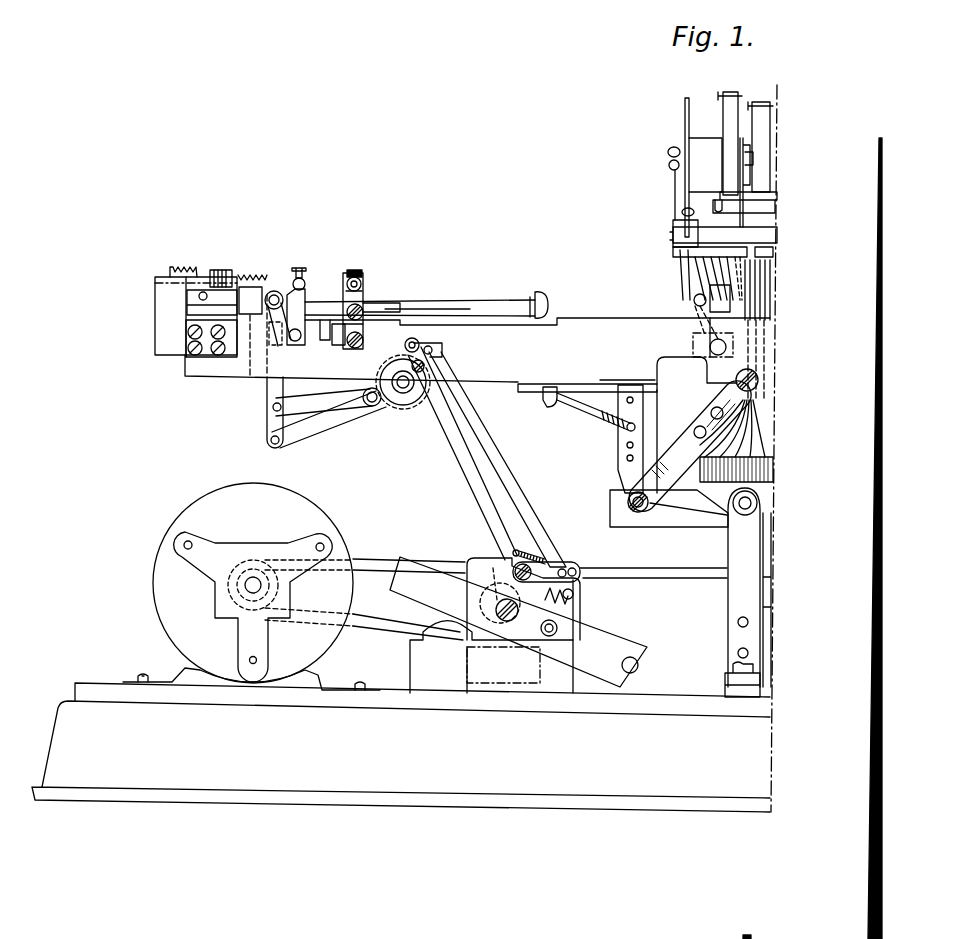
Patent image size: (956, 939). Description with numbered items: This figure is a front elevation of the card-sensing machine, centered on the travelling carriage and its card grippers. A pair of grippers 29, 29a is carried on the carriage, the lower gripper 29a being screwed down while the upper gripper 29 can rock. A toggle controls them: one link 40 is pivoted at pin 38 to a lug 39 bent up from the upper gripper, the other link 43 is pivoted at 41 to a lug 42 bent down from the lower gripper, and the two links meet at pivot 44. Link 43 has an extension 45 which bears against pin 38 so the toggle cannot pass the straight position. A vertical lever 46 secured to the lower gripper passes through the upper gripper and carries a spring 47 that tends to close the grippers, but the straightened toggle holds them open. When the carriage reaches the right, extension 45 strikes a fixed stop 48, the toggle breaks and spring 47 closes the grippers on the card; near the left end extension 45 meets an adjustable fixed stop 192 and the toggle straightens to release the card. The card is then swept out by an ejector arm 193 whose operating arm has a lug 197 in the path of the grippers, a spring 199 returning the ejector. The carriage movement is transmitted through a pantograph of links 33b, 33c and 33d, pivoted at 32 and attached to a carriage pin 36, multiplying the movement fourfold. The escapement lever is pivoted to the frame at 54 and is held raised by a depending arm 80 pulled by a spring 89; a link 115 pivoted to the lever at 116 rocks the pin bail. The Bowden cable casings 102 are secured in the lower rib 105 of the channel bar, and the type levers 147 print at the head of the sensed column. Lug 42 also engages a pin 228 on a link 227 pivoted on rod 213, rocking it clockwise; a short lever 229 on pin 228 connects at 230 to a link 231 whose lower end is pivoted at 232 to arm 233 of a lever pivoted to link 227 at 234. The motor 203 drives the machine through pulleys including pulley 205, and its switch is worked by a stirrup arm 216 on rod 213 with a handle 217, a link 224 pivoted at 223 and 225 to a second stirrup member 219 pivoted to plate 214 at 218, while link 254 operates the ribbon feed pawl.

The upper gripper 29 is at (420, 305).
The lower gripper 29a is at (320, 347).
The pivot 32 is at (410, 392).
The pantograph link 33b is at (357, 409).
The pantograph link 33c is at (313, 394).
The pantograph link 33d is at (268, 392).
The pin 36 is at (277, 326).
The pivot pin 38 is at (362, 297).
The lug 39 is at (307, 300).
The toggle link 40 is at (365, 306).
The pivot 41 is at (362, 343).
The lug 42 is at (340, 346).
The toggle link 43 is at (361, 327).
The pivot 44 is at (351, 310).
The extension 45 is at (352, 270).
The vertical lever 46 is at (356, 284).
The spring 47 is at (362, 291).
The fixed stop 48 is at (693, 320).
The pivot 54 is at (736, 520).
The depending arm 80 is at (620, 447).
The spring 89 is at (612, 418).
The Bowden cable casing 102 is at (694, 428).
The lower rib 105 is at (722, 372).
The link 115 is at (706, 524).
The pivot 116 is at (641, 513).
The type lever 147 is at (770, 297).
The fixed stop 192 is at (245, 270).
The ejector arm 193 is at (494, 303).
The lug 197 is at (248, 322).
The spring 199 is at (188, 266).
The motor 203 is at (312, 520).
The pulley 205 is at (680, 570).
The rod 213 is at (549, 636).
The plate 214 is at (578, 592).
The stirrup member arm 216 is at (430, 605).
The operating handle 217 is at (630, 673).
The pivot 218 is at (467, 650).
The stirrup member 219 is at (503, 665).
The pivot 223 is at (450, 597).
The link 224 is at (470, 570).
The pivot 225 is at (503, 592).
The link 227 is at (480, 508).
The pin 228 is at (429, 338).
The short lever 229 is at (443, 344).
The pivot 230 is at (440, 352).
The link 231 is at (491, 468).
The pivot 232 is at (568, 568).
The lever arm 233 is at (555, 565).
The pivot 234 is at (530, 552).
The link 254 is at (732, 330).